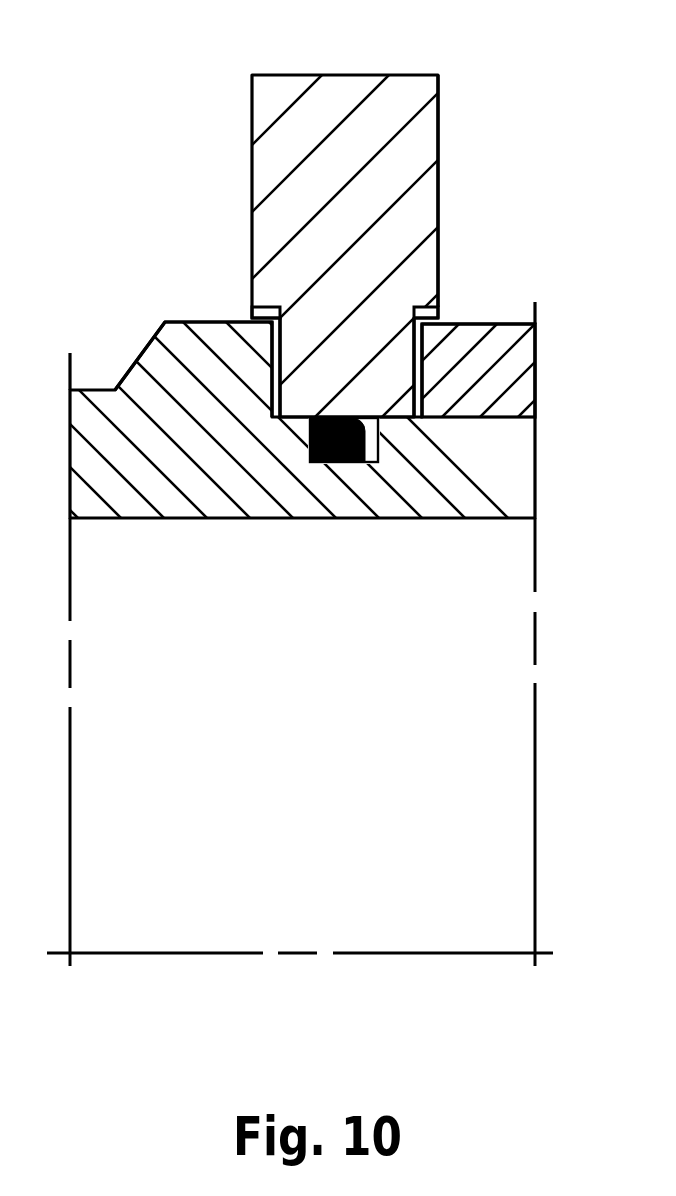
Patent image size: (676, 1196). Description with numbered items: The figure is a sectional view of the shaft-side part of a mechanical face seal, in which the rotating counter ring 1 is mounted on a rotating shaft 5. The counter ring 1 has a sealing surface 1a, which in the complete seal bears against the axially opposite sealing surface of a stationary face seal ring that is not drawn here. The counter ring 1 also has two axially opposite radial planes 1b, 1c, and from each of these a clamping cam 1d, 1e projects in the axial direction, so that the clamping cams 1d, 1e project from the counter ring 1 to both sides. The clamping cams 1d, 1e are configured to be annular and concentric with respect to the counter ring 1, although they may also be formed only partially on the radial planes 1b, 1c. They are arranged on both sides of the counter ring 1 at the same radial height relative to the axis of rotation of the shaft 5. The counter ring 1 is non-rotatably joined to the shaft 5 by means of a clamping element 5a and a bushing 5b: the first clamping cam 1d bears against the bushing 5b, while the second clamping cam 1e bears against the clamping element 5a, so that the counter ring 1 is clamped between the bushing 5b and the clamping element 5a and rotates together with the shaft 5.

The counter ring 1 is at (270, 158).
The sealing surface 1a is at (440, 140).
The radial plane 1b is at (250, 313).
The radial plane 1c is at (443, 313).
The first clamping cam 1d is at (300, 358).
The second clamping cam 1e is at (407, 354).
The shaft 5 is at (168, 350).
The clamping element 5a is at (477, 337).
The bushing 5b is at (185, 337).